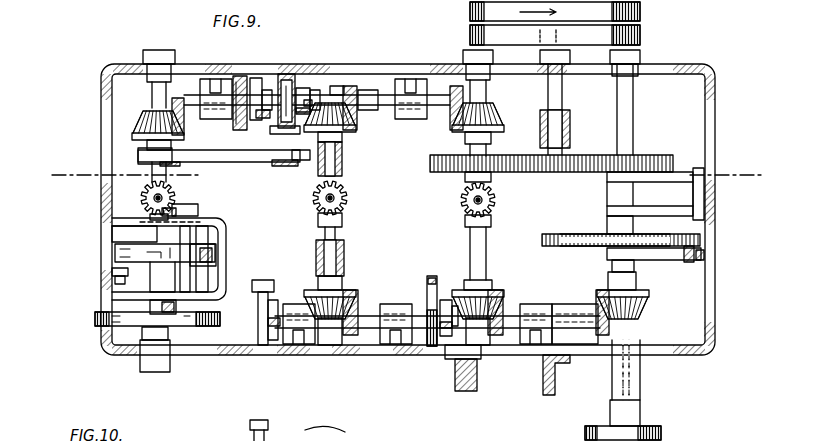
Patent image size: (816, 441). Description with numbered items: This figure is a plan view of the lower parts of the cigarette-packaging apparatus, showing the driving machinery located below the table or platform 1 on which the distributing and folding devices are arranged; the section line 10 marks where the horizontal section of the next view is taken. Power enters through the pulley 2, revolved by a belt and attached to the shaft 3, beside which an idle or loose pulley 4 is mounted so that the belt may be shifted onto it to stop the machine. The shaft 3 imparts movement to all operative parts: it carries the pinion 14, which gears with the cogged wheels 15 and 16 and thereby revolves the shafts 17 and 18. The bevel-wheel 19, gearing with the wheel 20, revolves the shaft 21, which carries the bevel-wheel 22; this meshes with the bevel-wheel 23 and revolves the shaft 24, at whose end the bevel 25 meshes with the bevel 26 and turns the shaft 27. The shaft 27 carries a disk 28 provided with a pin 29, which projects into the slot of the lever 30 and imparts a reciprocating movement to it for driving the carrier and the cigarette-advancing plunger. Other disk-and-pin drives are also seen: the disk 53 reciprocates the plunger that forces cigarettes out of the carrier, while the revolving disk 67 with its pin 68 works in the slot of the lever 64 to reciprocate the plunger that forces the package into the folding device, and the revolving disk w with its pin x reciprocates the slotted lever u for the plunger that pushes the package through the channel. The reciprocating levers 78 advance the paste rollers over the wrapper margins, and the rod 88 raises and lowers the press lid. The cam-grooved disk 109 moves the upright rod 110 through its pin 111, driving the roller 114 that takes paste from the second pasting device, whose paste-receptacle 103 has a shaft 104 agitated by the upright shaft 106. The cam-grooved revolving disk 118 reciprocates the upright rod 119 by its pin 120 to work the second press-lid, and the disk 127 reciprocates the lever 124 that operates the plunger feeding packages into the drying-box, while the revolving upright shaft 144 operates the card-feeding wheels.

In FIG. 9, the table or platform 1 is at (716, 319).
In FIG. 9, the pulley 2 is at (640, 12).
In FIG. 9, the shaft 3 is at (562, 100).
In FIG. 9, the idle or loose pulley 4 is at (640, 35).
In FIG. 9, the section line 10 is at (405, 176).
In FIG. 9, the pinion 14 is at (546, 172).
In FIG. 9, the cogged wheel 15 is at (655, 183).
In FIG. 9, the cogged wheel 16 is at (430, 165).
In FIG. 9, the shaft 17 is at (628, 107).
In FIG. 9, the shaft 18 is at (480, 98).
In FIG. 9, the bevel-wheel 19 is at (500, 128).
In FIG. 9, the wheel 20 is at (450, 118).
In FIG. 9, the shaft 21 is at (388, 118).
In FIG. 9, the bevel-wheel 22 is at (348, 94).
In FIG. 9, the bevel-wheel 23 is at (352, 132).
In FIG. 9, the shaft 24 is at (340, 170).
In FIG. 9, the bevel 25 is at (350, 290).
In FIG. 9, the bevel 26 is at (346, 335).
In FIG. 9, the shaft 27 is at (286, 292).
In FIG. 9, the disk 28 is at (434, 282).
In FIG. 9, the pin 29 is at (446, 306).
In FIG. 9, the lever 30 is at (445, 346).
In FIG. 9, the disk 53 is at (664, 432).
In FIG. 9, the lever 64 is at (710, 255).
In FIG. 9, the revolving disk 67 is at (583, 240).
In FIG. 9, the pin 68 is at (690, 262).
In FIG. 9, the levers 78 is at (192, 210).
In FIG. 9, the rod 88 is at (212, 253).
In FIG. 9, the upright shaft 106 is at (346, 200).
In FIG. 9, the disk 109 is at (287, 80).
In FIG. 9, the upright rod 110 is at (310, 104).
In FIG. 9, the pin 111 is at (311, 92).
In FIG. 9, the revolving disk 118 is at (240, 118).
In FIG. 9, the upright rod 119 is at (262, 82).
In FIG. 9, the pin 120 is at (262, 88).
In FIG. 9, the lever 124 is at (302, 160).
In FIG. 9, the disk 127 is at (140, 152).
In FIG. 9, the revolving upright shaft 144 is at (496, 200).
In FIG. 10, the paste-receptacle 103 is at (322, 430).
In FIG. 10, the shaft 104 is at (342, 432).
In FIG. 10, the roller 114 is at (274, 430).
In FIG. 9, the shaft d is at (97, 316).
In FIG. 9, the lever u is at (266, 272).
In FIG. 9, the revolving disk w is at (268, 348).
In FIG. 9, the pin x is at (253, 288).